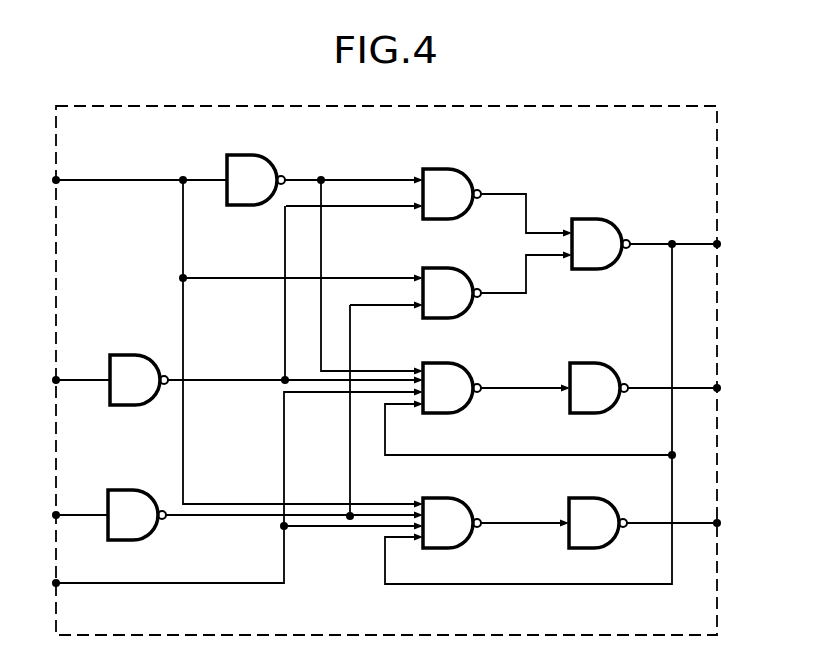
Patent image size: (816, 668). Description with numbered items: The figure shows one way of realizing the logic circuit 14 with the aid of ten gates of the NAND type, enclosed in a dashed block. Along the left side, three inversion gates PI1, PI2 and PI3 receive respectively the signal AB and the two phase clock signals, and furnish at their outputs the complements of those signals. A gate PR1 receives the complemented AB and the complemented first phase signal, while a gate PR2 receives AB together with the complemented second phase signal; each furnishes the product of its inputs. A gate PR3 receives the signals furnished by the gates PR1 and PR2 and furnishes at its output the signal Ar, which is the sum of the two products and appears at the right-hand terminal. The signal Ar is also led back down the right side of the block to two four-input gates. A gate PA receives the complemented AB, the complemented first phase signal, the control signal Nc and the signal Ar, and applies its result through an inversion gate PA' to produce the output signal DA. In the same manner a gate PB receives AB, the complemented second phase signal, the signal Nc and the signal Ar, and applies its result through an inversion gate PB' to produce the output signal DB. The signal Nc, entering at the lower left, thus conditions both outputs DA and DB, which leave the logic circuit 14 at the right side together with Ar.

The logic circuit 14 is at (623, 107).
The signal AB is at (56, 180).
The inversion gate PI1 is at (254, 172).
The inversion gate PI2 is at (121, 367).
The inversion gate PI3 is at (120, 500).
The gate PR1 is at (456, 186).
The gate PR2 is at (446, 284).
The gate PR3 is at (596, 237).
The gate PA is at (496, 374).
The inversion gate PA' is at (643, 373).
The gate PB is at (496, 509).
The inversion gate PB' is at (643, 509).
The signal Ar is at (717, 242).
The signal DA is at (717, 386).
The signal DB is at (717, 521).
The signal Nc is at (56, 583).